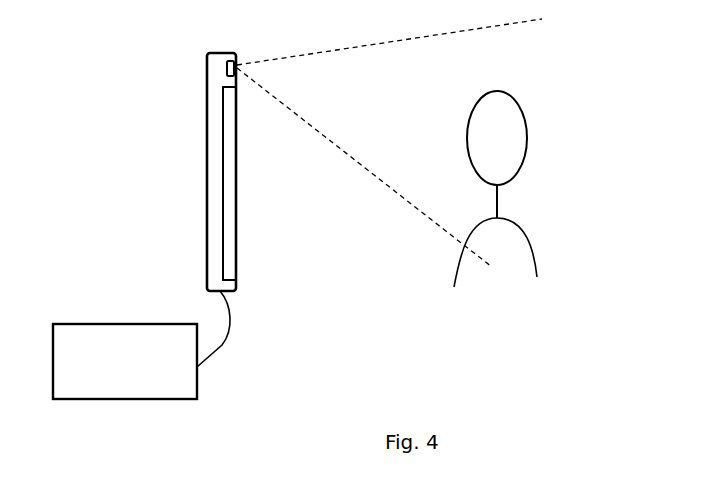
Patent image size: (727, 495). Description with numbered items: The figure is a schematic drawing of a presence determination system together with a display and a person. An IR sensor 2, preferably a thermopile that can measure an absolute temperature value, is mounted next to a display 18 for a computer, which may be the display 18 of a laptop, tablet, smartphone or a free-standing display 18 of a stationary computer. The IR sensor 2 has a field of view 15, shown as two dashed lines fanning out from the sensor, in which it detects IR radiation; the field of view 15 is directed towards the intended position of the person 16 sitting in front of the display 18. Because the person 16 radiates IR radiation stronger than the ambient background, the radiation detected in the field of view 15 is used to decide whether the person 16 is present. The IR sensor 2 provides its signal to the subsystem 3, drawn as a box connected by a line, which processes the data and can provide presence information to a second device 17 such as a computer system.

The IR sensor 2 is at (237, 63).
The subsystem 3 is at (97, 396).
The field of view 15 is at (364, 158).
The person 16 is at (524, 152).
The second device 17 is at (167, 396).
The display 18 is at (236, 222).